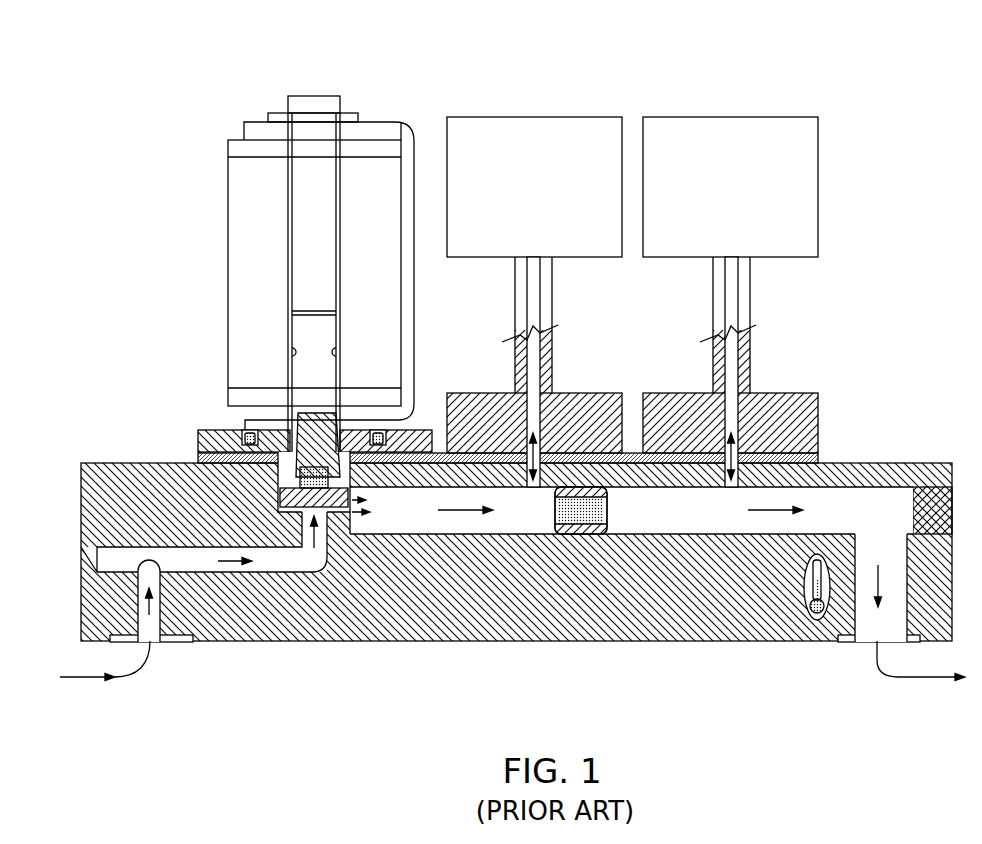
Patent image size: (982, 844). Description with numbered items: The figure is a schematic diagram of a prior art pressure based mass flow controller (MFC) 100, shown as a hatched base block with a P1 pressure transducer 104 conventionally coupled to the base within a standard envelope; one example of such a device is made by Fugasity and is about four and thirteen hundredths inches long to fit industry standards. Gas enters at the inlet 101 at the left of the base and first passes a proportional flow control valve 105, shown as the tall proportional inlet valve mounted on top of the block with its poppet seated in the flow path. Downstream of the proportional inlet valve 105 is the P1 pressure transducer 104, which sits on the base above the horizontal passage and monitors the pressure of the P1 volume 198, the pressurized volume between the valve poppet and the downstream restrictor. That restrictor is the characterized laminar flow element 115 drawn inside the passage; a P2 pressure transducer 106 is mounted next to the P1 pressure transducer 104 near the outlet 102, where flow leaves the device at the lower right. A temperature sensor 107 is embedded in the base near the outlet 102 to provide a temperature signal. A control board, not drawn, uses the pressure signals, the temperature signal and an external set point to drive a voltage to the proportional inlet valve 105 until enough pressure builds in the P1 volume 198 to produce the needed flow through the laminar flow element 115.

The pressure based mass flow controller 100 is at (835, 52).
The inlet 101 is at (152, 652).
The outlet 102 is at (877, 647).
The P1 pressure transducer 104 is at (548, 117).
The proportional flow control valve 105 is at (307, 273).
The P2 pressure transducer 106 is at (818, 188).
The temperature sensor 107 is at (800, 583).
The characterized laminar flow element 115 is at (580, 517).
The P1 volume 198 is at (398, 503).